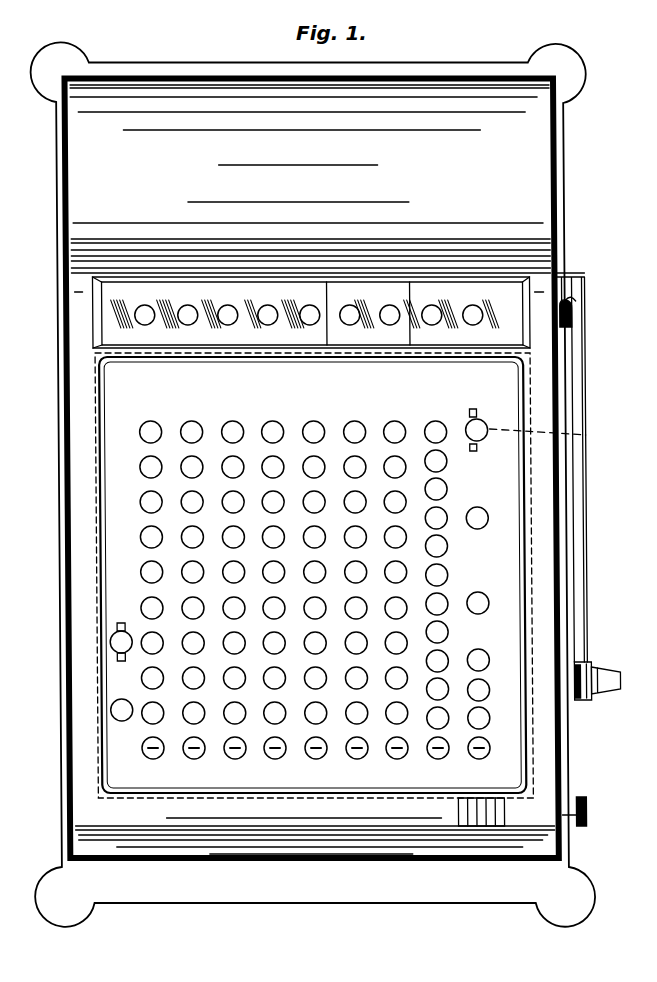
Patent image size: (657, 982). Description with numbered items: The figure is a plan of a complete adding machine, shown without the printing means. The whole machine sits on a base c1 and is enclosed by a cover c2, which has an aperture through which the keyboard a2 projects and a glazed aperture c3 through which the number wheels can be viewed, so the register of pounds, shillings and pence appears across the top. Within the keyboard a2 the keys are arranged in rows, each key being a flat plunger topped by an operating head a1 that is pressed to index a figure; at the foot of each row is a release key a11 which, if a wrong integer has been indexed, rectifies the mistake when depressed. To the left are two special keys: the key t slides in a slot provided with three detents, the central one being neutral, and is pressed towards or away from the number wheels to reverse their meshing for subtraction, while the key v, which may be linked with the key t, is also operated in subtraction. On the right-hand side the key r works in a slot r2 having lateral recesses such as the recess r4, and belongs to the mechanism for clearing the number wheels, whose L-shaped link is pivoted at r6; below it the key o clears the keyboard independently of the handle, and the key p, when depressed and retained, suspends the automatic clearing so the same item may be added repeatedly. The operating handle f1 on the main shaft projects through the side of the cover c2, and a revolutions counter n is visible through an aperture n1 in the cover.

The base c1 is at (372, 71).
The cover c2 is at (297, 90).
The glazed aperture c3 is at (112, 329).
The operating heads a1 is at (140, 573).
The keyboard a2 is at (113, 607).
The release key a11 is at (159, 755).
The key t is at (108, 643).
The key v is at (108, 709).
The key r is at (487, 427).
The slot r2 is at (469, 418).
The pivot r6 is at (480, 411).
The lateral recess r4 is at (545, 433).
The key o is at (487, 516).
The key p is at (488, 603).
The operating handle f1 is at (587, 644).
The aperture n1 is at (473, 798).
The revolutions counter n is at (488, 797).